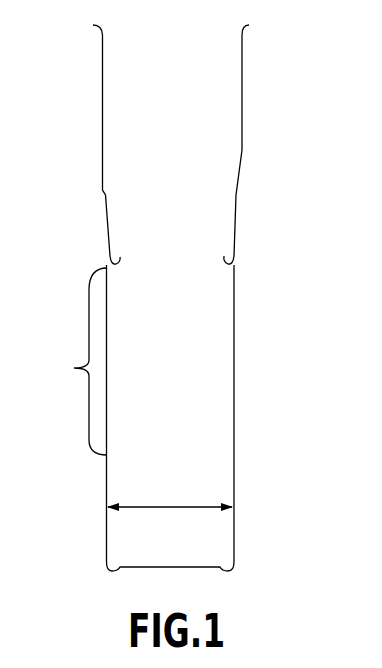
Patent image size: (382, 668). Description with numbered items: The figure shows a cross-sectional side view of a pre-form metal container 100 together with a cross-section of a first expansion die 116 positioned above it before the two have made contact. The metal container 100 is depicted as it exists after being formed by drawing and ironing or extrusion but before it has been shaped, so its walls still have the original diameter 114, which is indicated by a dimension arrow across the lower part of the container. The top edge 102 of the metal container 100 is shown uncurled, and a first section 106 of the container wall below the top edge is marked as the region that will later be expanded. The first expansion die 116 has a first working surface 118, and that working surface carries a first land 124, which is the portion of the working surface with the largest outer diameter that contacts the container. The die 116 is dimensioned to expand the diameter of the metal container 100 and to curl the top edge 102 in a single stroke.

The metal container 100 is at (183, 298).
The top edge 102 is at (106, 265).
The first section 106 is at (128, 418).
The original diameter 114 is at (146, 506).
The first expansion die 116 is at (194, 145).
The first working surface 118 is at (107, 215).
The first land 124 is at (238, 182).